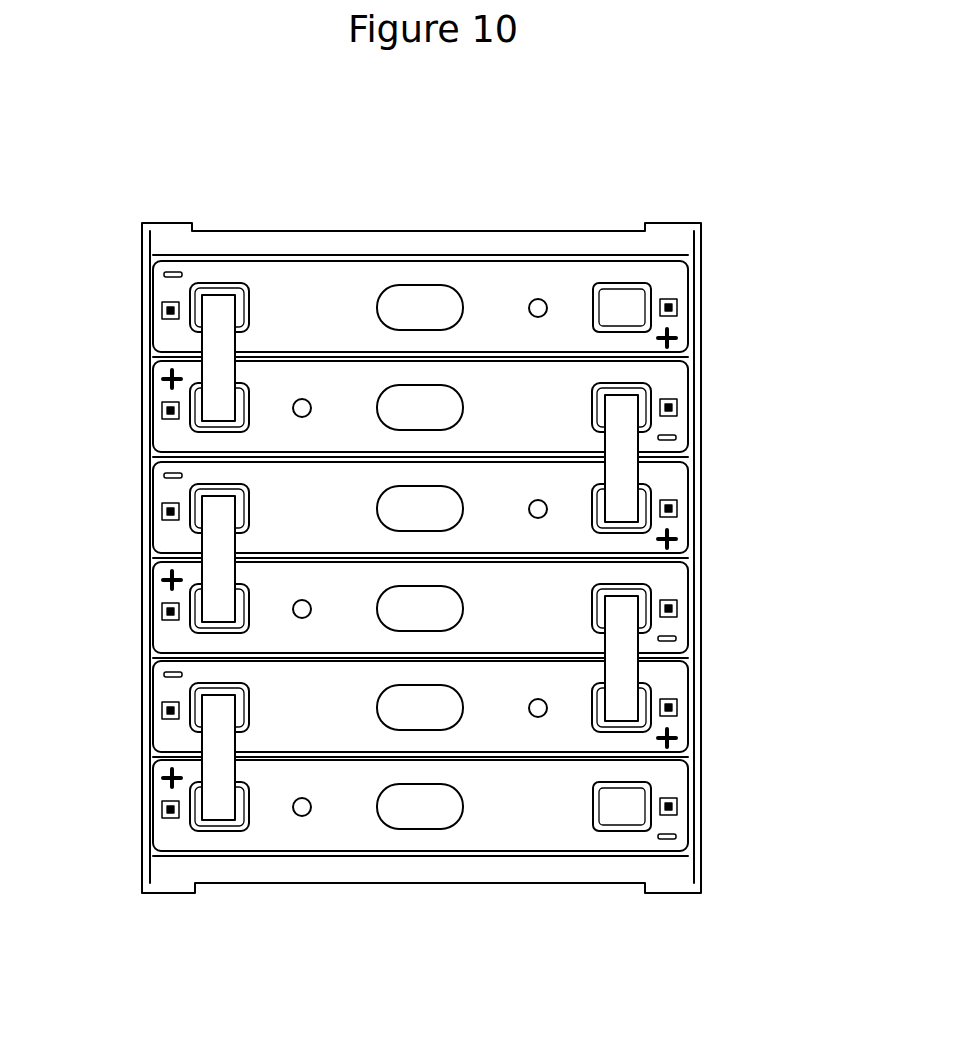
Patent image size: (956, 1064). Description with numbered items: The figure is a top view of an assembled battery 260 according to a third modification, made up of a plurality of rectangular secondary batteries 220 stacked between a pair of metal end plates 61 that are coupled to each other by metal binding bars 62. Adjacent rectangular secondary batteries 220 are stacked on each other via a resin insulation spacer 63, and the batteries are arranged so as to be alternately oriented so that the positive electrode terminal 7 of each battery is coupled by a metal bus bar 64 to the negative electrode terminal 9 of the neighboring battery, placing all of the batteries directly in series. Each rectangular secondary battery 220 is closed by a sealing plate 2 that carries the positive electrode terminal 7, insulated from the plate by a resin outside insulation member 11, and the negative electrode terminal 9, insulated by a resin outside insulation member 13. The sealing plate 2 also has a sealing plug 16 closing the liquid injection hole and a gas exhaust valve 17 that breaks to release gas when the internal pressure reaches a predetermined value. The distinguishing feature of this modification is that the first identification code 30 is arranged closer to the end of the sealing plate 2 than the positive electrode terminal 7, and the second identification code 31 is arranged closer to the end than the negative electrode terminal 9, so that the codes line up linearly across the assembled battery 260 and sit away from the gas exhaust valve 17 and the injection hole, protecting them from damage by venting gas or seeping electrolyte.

The assembled battery 260 is at (148, 115).
The sealing plate 2 is at (285, 300).
The rectangular secondary battery 220 is at (663, 268).
The positive electrode terminal 7 is at (647, 291).
The negative electrode terminal 9 is at (193, 292).
The outside insulation member 11 is at (637, 295).
The outside insulation member 13 is at (215, 288).
The sealing plug 16 is at (538, 305).
The gas exhaust valve 17 is at (415, 310).
The first identification code 30 is at (160, 408).
The second identification code 31 is at (160, 308).
The end plate 61 is at (243, 245).
The binding bar 62 is at (147, 598).
The insulation spacer 63 is at (690, 355).
The bus bar 64 is at (220, 348).